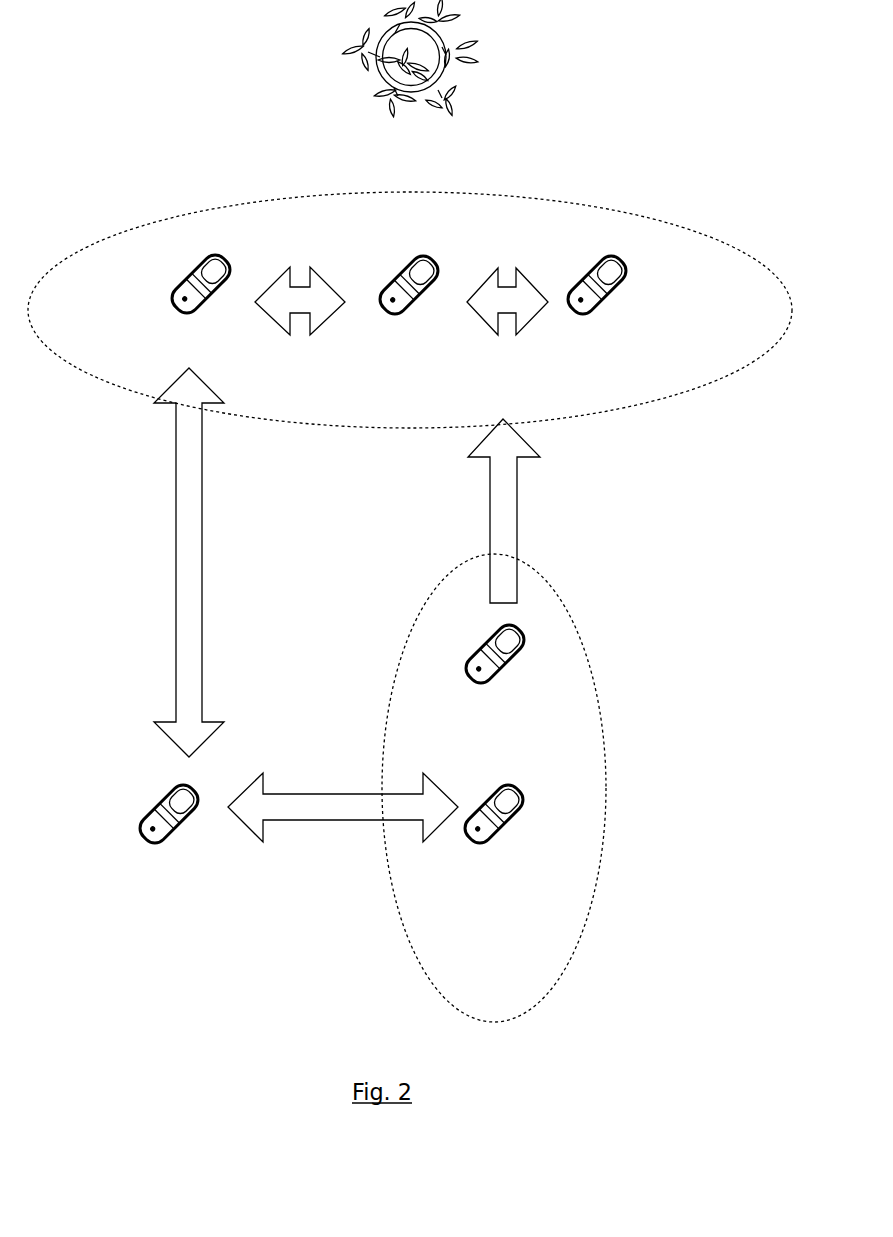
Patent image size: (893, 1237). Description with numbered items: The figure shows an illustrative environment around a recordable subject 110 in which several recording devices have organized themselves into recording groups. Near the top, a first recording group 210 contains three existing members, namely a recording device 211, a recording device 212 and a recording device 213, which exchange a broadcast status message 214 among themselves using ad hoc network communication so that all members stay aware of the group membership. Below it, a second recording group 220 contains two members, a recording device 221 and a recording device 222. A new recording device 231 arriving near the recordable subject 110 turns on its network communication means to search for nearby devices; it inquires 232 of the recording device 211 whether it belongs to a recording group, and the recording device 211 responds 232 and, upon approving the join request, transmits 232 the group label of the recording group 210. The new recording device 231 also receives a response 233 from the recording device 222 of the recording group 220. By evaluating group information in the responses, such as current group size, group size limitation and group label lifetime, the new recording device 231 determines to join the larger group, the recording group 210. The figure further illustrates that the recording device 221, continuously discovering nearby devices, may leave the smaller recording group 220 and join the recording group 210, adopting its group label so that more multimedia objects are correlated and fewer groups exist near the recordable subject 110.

The recordable subject 110 is at (410, 89).
The recording group 210 is at (410, 310).
The recording device 211 is at (200, 305).
The recording device 212 is at (409, 306).
The recording device 213 is at (598, 306).
The status message broadcast 214 is at (401, 301).
The recording group 220 is at (494, 788).
The recording device 221 is at (495, 675).
The recording device 222 is at (495, 834).
The new recording device 231 is at (170, 834).
The inquiry and response communication 232 is at (189, 562).
The response communication 233 is at (343, 807).